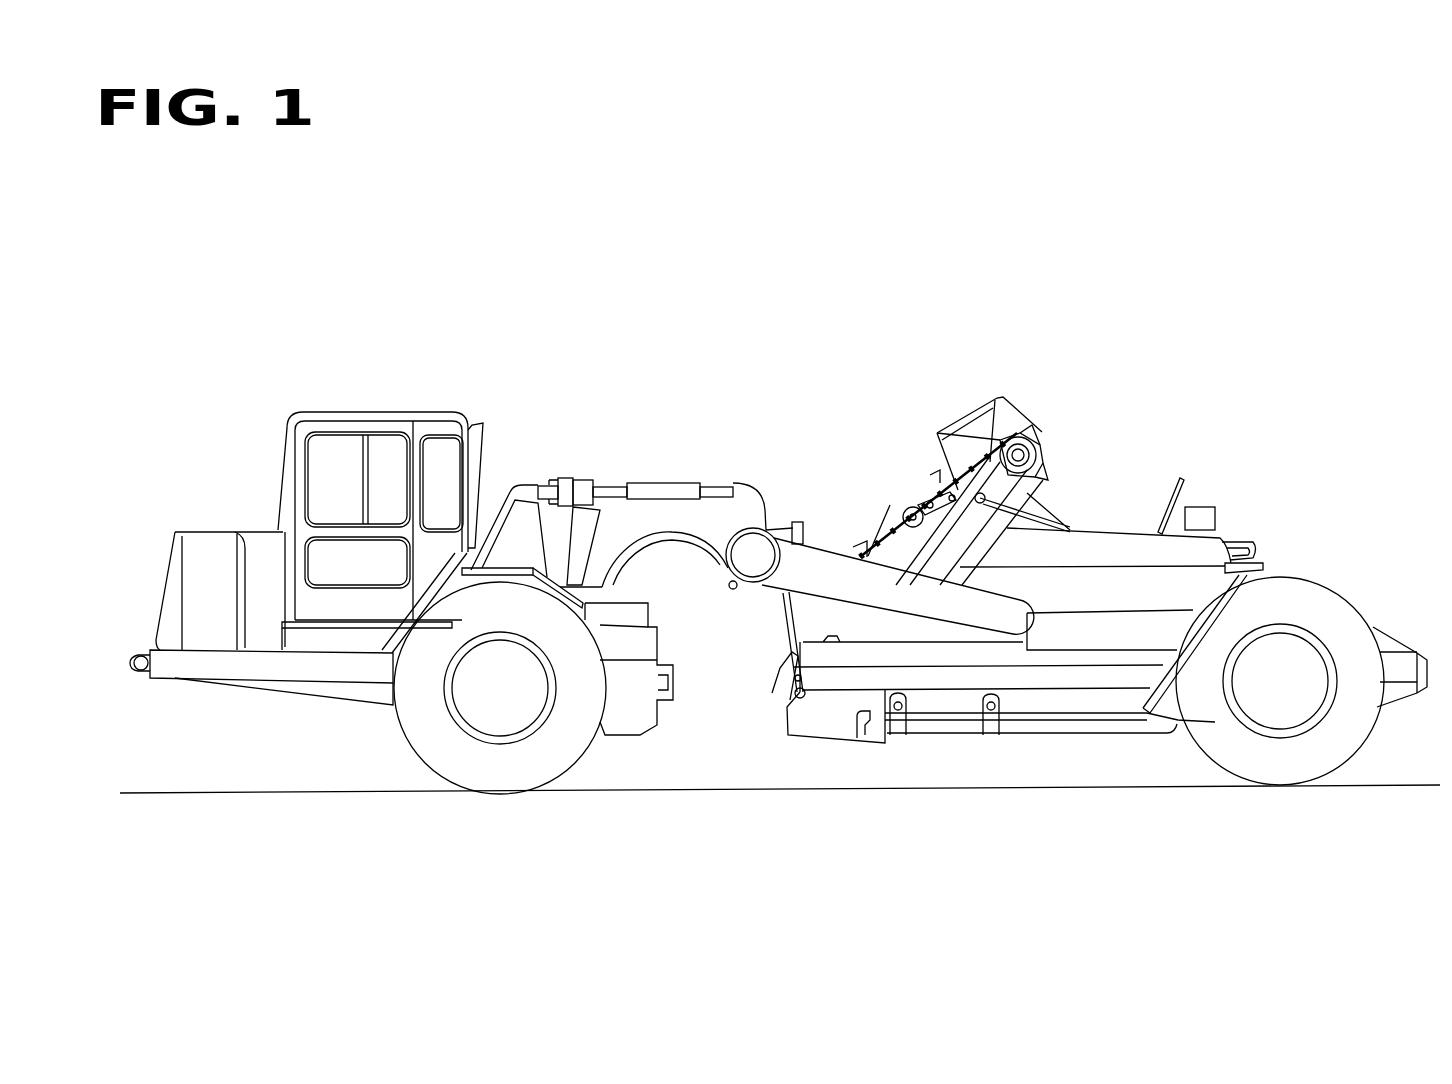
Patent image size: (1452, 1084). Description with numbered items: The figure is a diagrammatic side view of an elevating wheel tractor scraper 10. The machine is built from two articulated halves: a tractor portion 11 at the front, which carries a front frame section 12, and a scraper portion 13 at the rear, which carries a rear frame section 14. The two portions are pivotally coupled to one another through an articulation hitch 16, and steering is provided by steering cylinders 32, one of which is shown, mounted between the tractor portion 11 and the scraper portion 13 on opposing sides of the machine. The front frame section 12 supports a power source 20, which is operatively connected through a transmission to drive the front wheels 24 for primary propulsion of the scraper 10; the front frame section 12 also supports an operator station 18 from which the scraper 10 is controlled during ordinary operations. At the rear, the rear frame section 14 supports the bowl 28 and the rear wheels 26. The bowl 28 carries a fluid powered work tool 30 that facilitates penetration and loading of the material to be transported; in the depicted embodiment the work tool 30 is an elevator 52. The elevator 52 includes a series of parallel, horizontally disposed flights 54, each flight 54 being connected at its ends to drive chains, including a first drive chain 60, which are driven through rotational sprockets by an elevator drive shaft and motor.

The elevating wheel tractor scraper 10 is at (876, 330).
The tractor portion 11 is at (276, 434).
The front frame section 12 is at (253, 670).
The scraper portion 13 is at (1270, 535).
The rear frame section 14 is at (960, 685).
The articulation hitch 16 is at (582, 432).
The operator station 18 is at (372, 425).
The power source 20 is at (226, 537).
The front wheels 24 is at (563, 750).
The rear wheels 26 is at (1220, 753).
The bowl 28 is at (1088, 537).
The fluid powered work tool 30 is at (1022, 383).
The steering cylinders 32 is at (655, 487).
The elevator 52 is at (1040, 440).
The flights 54 is at (890, 512).
The first drive chain 60 is at (910, 508).